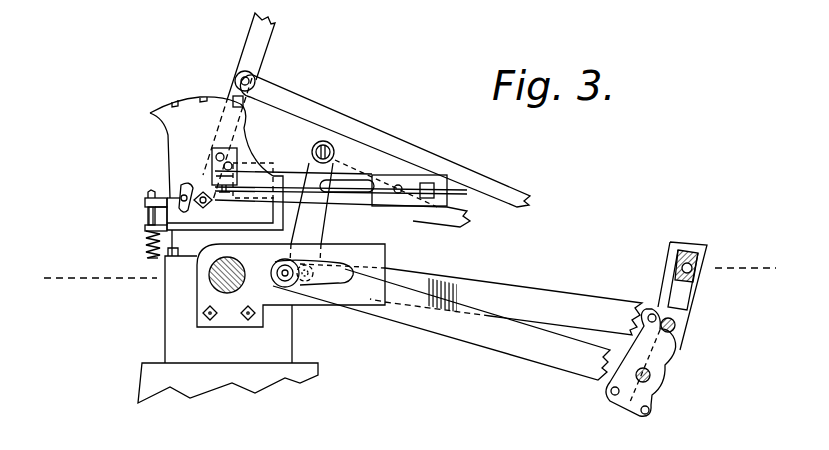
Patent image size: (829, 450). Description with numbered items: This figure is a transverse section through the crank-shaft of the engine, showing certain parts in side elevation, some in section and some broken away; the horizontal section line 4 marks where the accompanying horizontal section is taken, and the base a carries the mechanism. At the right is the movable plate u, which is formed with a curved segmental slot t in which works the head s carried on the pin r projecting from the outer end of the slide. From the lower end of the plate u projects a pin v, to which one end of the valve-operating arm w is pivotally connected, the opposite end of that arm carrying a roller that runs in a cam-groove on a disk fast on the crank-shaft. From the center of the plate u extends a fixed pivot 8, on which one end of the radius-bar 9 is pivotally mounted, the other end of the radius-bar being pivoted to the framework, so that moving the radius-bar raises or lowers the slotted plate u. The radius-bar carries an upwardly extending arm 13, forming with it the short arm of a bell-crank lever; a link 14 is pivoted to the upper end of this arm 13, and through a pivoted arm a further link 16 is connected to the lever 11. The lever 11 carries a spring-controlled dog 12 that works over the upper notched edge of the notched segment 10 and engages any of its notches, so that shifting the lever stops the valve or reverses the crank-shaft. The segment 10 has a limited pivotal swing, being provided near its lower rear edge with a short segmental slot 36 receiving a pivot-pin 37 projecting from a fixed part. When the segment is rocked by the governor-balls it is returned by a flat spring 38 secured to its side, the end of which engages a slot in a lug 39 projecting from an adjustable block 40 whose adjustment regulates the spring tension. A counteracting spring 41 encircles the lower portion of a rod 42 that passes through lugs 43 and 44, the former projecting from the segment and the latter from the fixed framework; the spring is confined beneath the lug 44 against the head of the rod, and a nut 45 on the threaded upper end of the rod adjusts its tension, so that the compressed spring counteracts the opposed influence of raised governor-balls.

The base / pedestal a is at (172, 344).
The section line 4 4 is at (409, 272).
The fixed pivot 8 is at (676, 325).
The radius-bar 9 is at (542, 297).
The notched segment 10 is at (162, 114).
The lever 11 is at (264, 42).
The spring-controlled dog 12 is at (246, 104).
The arm 13 is at (320, 222).
The link 14 is at (441, 214).
The link 16 is at (371, 133).
The segmental slot 36 is at (178, 184).
The pivot-pin 37 is at (178, 192).
The flat spring 38 is at (289, 190).
The lug 39 is at (428, 182).
The adjustable block 40 is at (442, 184).
The counteracting spring 41 is at (147, 236).
The rod 42 is at (148, 211).
The lug 43 is at (145, 203).
The lug 44 is at (145, 228).
The nut 45 is at (148, 197).
The pin r is at (697, 265).
The head s is at (676, 250).
The curved segmental slot t is at (683, 300).
The movable plate u is at (678, 351).
The pin v is at (651, 380).
The valve-operating arm w is at (528, 357).